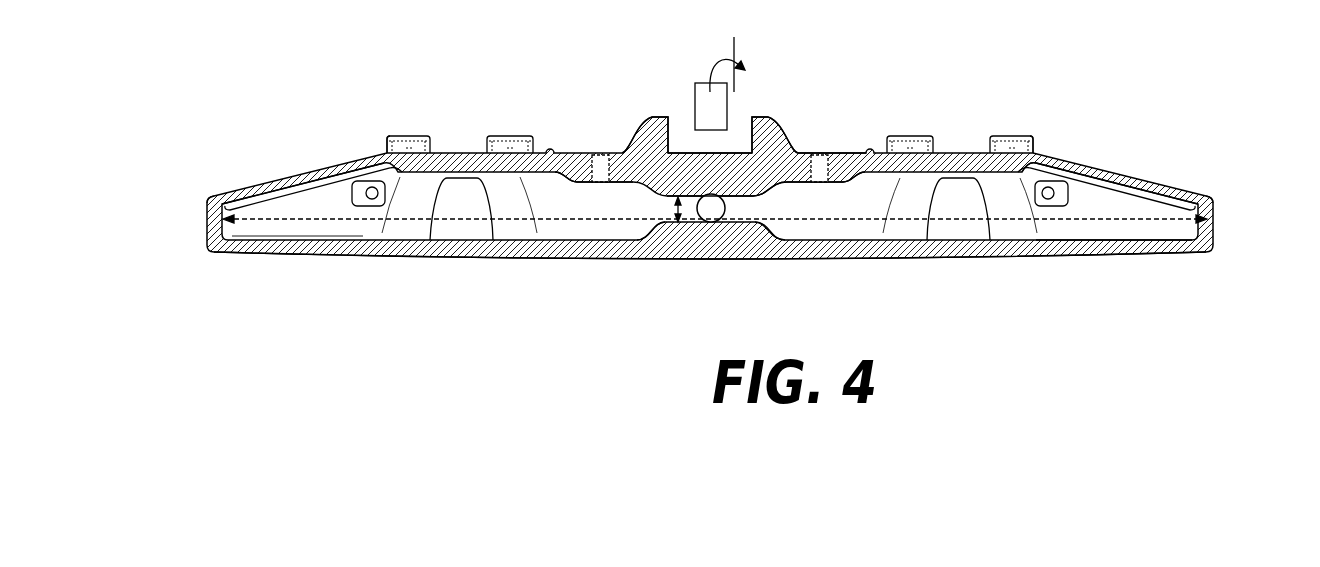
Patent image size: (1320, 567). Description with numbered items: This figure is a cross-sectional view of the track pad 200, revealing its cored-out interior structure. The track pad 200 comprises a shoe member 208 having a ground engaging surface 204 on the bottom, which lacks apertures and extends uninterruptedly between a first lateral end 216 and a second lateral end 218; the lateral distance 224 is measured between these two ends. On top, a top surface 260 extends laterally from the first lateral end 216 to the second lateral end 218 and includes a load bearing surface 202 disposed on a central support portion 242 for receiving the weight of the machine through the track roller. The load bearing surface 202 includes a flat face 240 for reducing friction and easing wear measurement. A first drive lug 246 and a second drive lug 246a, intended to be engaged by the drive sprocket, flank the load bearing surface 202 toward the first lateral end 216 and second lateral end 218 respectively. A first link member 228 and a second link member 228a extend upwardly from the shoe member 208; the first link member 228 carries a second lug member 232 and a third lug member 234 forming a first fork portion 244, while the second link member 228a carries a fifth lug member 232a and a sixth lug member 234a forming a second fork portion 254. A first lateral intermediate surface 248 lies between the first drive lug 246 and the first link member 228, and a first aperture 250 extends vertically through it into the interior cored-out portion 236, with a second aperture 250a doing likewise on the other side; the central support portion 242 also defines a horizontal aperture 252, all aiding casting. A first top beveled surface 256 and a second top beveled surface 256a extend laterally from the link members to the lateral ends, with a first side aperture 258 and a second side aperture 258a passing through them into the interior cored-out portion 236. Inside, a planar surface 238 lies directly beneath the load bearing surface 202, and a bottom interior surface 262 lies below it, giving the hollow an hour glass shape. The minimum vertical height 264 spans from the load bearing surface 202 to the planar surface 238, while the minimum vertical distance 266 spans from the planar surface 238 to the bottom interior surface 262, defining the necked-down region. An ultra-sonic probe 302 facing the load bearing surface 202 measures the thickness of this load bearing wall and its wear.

The track pad 200 is at (920, 82).
The load bearing surface 202 is at (686, 144).
The ground engaging surface 204 is at (860, 244).
The shoe member 208 is at (1164, 259).
The first lateral end 216 is at (223, 219).
The second lateral end 218 is at (1207, 219).
The lateral distance 224 is at (457, 222).
The first link member 228 is at (414, 128).
The second link member 228a is at (1014, 127).
The second lug member 232 is at (387, 137).
The fifth lug member 232a is at (1035, 151).
The third lug member 234 is at (505, 137).
The sixth lug member 234a is at (912, 135).
The interior cored-out portion 236 is at (1048, 235).
The planar surface 238 is at (687, 224).
The flat face 240 is at (709, 185).
The central support portion 242 is at (796, 148).
The first fork portion 244 is at (454, 146).
The first drive lug 246 is at (645, 117).
The second drive lug 246a is at (776, 117).
The first lateral intermediate surface 248 is at (568, 153).
The first aperture 250 is at (593, 182).
The second aperture 250a is at (840, 182).
The horizontal aperture 252 is at (707, 209).
The second fork portion 254 is at (970, 146).
The first top beveled surface 256 is at (213, 196).
The second top beveled surface 256a is at (1197, 192).
The first side aperture 258 is at (291, 185).
The second side aperture 258a is at (1129, 187).
The top surface 260 is at (1050, 159).
The bottom interior surface 262 is at (745, 222).
The minimum vertical height 264 is at (740, 180).
The minimum vertical distance 266 is at (675, 207).
The ultra-sonic probe 302 is at (698, 73).